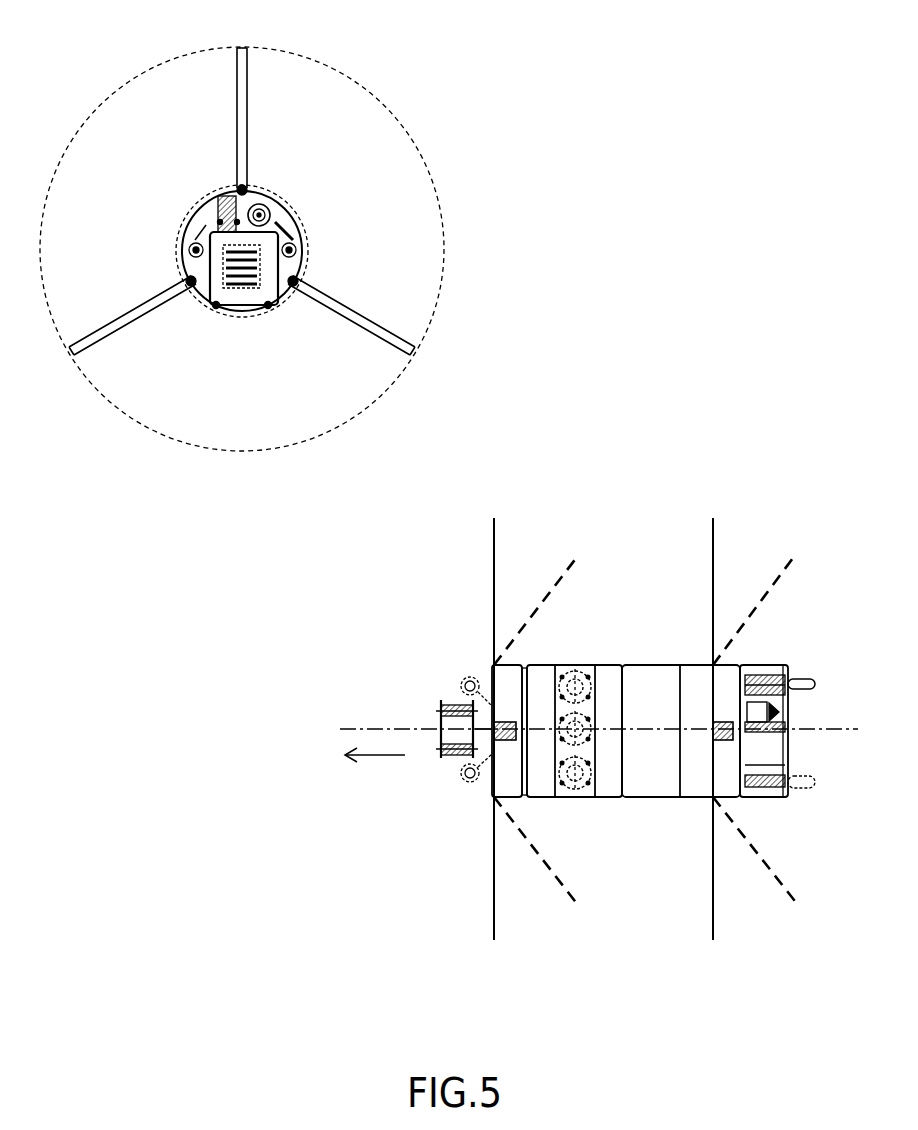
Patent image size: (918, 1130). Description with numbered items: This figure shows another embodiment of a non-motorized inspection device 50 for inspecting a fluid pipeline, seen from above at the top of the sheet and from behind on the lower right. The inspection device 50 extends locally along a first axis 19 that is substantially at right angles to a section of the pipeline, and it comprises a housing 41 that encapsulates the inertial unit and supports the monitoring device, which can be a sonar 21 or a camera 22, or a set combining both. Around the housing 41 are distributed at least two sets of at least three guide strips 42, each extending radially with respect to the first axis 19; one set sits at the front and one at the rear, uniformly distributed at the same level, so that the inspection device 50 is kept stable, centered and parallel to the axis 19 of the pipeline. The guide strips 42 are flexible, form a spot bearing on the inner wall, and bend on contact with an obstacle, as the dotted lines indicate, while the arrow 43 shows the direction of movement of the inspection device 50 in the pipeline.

The inspection device 50 is at (121, 53).
The guide strips 42 is at (246, 86).
The housing 41 is at (637, 665).
The camera 22 is at (577, 783).
The sonar 21 is at (440, 702).
The first axis 19 is at (827, 728).
The arrow indicating direction of movement 43 is at (385, 756).